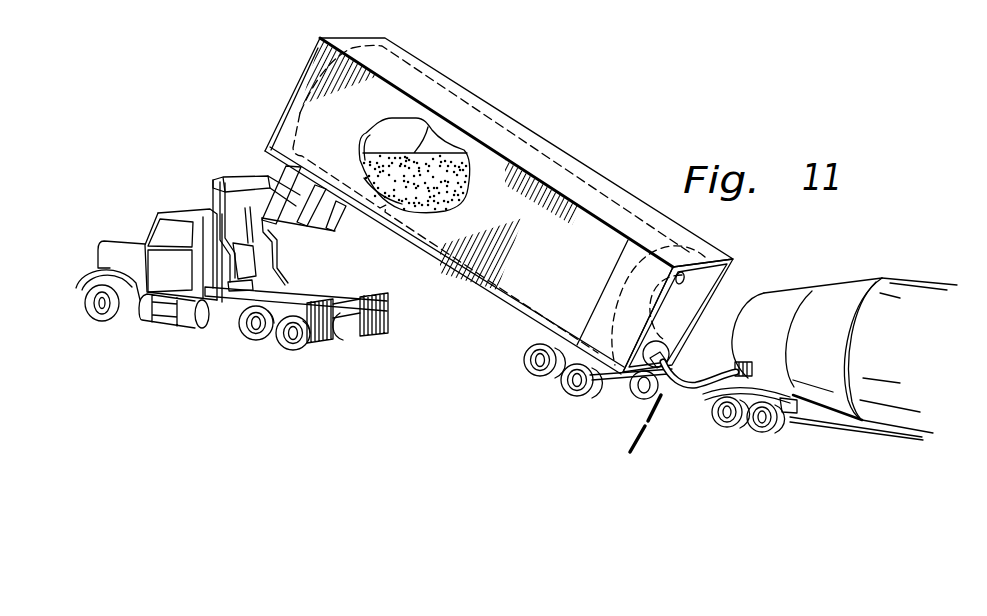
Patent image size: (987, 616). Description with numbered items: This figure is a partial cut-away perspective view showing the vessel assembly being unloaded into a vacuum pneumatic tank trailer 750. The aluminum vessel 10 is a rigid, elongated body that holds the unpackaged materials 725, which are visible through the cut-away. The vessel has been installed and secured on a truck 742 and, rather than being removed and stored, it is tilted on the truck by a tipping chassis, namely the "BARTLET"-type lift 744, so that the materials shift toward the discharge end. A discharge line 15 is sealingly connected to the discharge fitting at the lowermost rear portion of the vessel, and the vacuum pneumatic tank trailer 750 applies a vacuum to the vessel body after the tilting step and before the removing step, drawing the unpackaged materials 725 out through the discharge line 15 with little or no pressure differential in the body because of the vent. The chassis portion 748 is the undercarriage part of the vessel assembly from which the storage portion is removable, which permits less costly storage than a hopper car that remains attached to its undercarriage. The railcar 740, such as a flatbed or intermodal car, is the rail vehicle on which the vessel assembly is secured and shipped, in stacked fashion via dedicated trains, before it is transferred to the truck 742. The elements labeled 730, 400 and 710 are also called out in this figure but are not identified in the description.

The truck 742 is at (190, 206).
The "BARTLET"-type lift 744 is at (252, 179).
The container lid 730 is at (428, 36).
The lid 400 is at (496, 149).
The unpackaged materials 725 is at (428, 127).
The aluminum vessel 10 is at (569, 166).
The container 710 is at (499, 202).
The vacuum pneumatic tank trailer 750 is at (837, 298).
The discharge line 15 is at (707, 376).
The chassis portion 748 is at (661, 427).
The railcar 740 is at (633, 4).